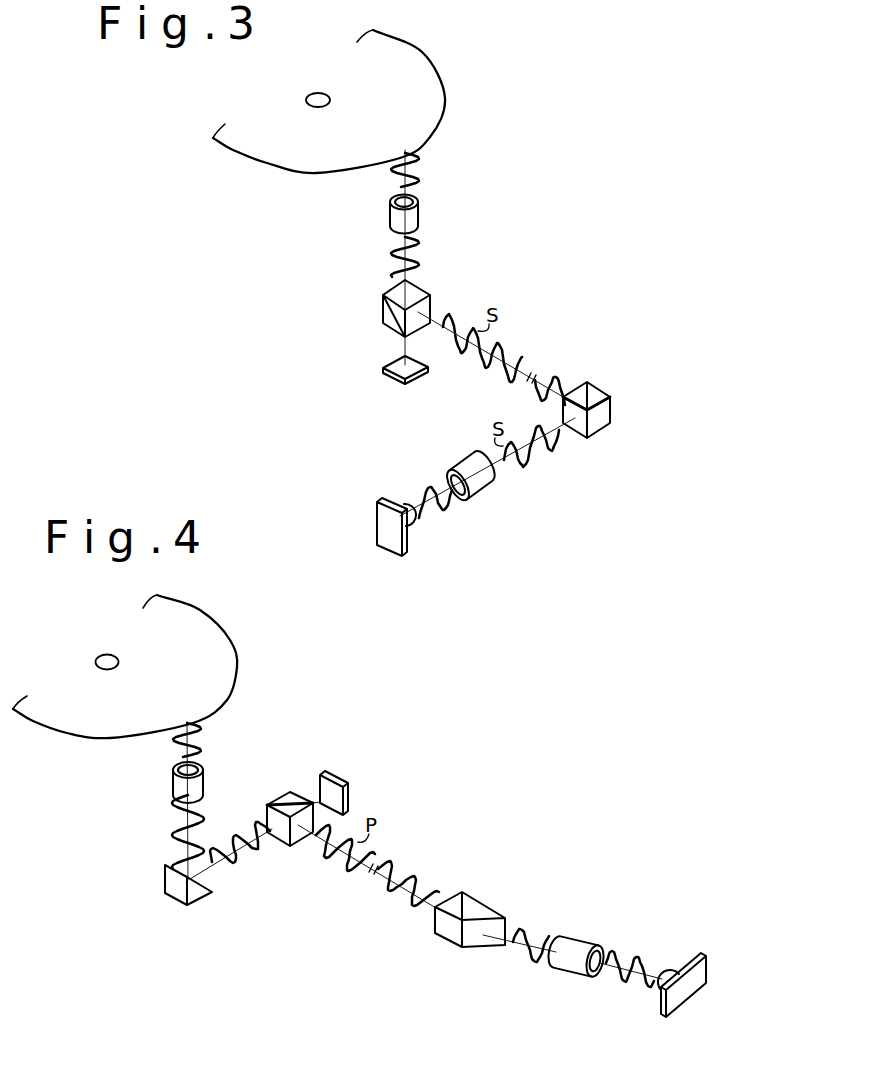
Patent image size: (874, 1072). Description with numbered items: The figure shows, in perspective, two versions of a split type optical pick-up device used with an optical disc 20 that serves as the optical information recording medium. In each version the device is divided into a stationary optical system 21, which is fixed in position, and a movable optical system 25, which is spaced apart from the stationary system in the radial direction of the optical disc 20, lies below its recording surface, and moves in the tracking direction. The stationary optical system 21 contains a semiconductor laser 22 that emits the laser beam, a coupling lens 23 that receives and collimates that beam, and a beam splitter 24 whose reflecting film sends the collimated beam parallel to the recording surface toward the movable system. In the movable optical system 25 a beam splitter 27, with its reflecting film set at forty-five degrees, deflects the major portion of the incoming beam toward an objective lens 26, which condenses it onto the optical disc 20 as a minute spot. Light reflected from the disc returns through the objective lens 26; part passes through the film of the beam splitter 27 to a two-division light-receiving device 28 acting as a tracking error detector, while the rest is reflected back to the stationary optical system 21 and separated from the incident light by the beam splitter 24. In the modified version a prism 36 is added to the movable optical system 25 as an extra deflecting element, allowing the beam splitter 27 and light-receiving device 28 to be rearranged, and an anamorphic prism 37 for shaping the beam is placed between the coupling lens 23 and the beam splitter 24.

In FIG. 3, the optical disc 20 is at (436, 62).
In FIG. 4, the optical disc 20 is at (208, 620).
In FIG. 3, the stationary optical system 21 is at (553, 310).
In FIG. 4, the stationary optical system 21 is at (518, 870).
In FIG. 3, the semiconductor laser 22 is at (413, 526).
In FIG. 4, the semiconductor laser 22 is at (668, 968).
In FIG. 3, the coupling lens 23 is at (486, 486).
In FIG. 4, the coupling lens 23 is at (577, 947).
In FIG. 3, the beam splitter 24 is at (598, 425).
In FIG. 4, the beam splitter 24 is at (470, 902).
In FIG. 3, the movable optical system 25 is at (374, 343).
In FIG. 4, the movable optical system 25 is at (245, 772).
In FIG. 3, the objective lens 26 is at (418, 210).
In FIG. 4, the objective lens 26 is at (174, 784).
In FIG. 3, the beam splitter 27 is at (415, 296).
In FIG. 4, the beam splitter 27 is at (287, 796).
In FIG. 3, the two-division light-receiving device 28 is at (388, 377).
In FIG. 4, the two-division light-receiving device 28 is at (343, 776).
In FIG. 4, the prism 36 is at (205, 895).
In FIG. 4, the anamorphic prism 37 is at (478, 945).